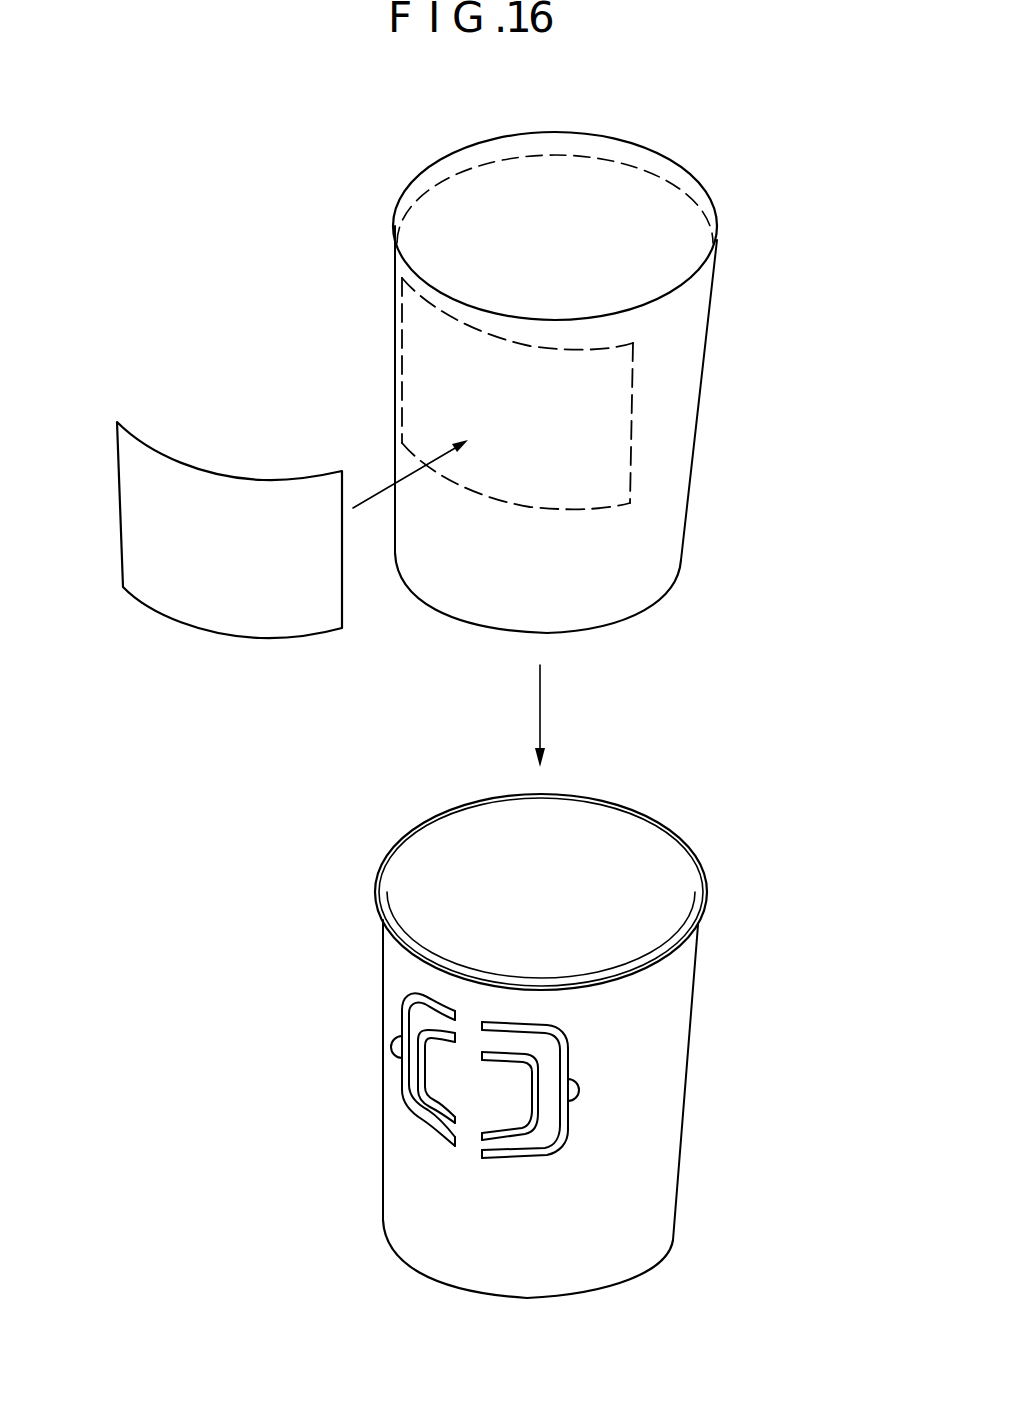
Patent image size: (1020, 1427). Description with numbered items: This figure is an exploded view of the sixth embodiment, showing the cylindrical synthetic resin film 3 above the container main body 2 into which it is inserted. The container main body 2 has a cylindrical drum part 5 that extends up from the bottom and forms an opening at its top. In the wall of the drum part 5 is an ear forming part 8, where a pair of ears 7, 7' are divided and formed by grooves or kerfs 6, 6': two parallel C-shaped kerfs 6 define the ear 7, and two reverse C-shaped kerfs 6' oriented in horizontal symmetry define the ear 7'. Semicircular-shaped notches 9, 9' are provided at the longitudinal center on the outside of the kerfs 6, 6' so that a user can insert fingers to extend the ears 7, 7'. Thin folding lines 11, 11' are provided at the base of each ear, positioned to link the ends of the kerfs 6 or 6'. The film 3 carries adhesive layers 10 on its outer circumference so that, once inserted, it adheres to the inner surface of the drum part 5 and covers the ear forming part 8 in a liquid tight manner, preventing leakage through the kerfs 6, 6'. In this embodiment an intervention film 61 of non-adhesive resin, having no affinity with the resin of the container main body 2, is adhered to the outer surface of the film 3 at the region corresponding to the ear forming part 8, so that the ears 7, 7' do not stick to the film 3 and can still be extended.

The container main body 2 is at (528, 1039).
The synthetic resin film 3 is at (680, 154).
The cylindrical drum part 5 is at (677, 1177).
The kerfs 6 is at (374, 1087).
The kerfs 6' is at (623, 1089).
The ear 7 is at (374, 1076).
The ear 7' is at (619, 1155).
The ear forming part 8 is at (528, 1074).
The semicircular-shaped notch 9 is at (347, 1030).
The semicircular-shaped notch 9' is at (666, 1089).
The adhesive layers 10 is at (682, 335).
The thin folding line 11 is at (442, 1055).
The thin folding line 11' is at (502, 1055).
The intervention film 61 is at (247, 478).